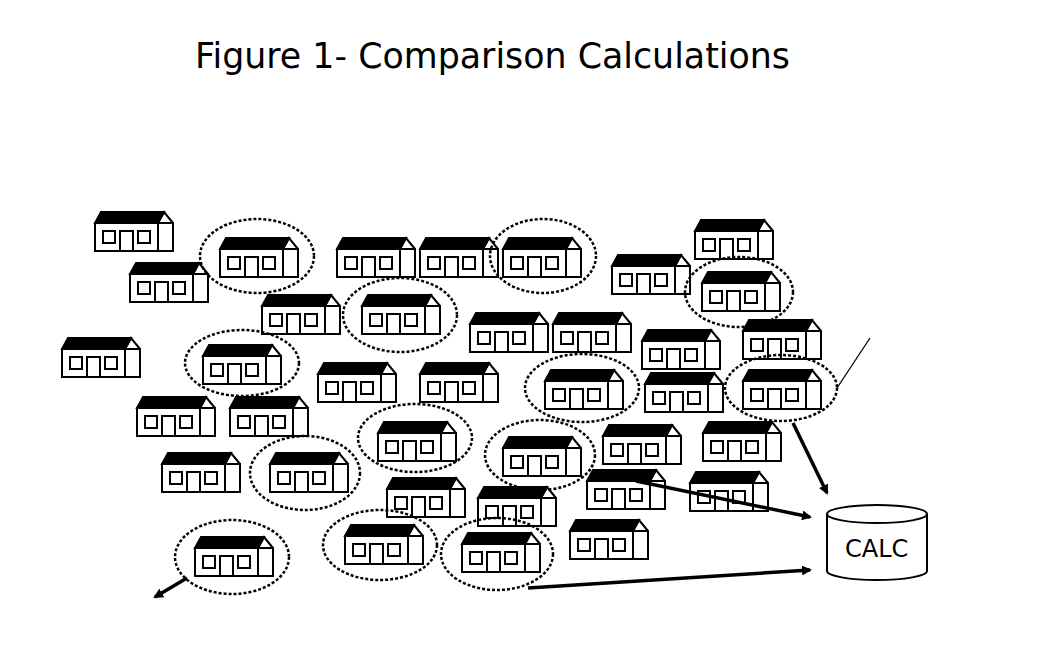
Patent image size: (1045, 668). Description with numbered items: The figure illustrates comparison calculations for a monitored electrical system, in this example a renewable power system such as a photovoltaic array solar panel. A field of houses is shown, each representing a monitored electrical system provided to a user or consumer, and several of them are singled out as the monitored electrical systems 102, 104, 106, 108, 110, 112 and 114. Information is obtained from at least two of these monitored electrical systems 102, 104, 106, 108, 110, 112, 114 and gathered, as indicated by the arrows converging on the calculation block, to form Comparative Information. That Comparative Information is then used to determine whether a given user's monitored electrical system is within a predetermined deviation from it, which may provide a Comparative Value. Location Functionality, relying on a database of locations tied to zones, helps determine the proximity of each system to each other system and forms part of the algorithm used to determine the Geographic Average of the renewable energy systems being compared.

The monitored electrical system 102 is at (415, 402).
The monitored electrical system 104 is at (437, 287).
The monitored electrical system 106 is at (578, 227).
The monitored electrical system 108 is at (622, 362).
The monitored electrical system 110 is at (795, 290).
The monitored electrical system 112 is at (180, 370).
The monitored electrical system 114 is at (257, 218).